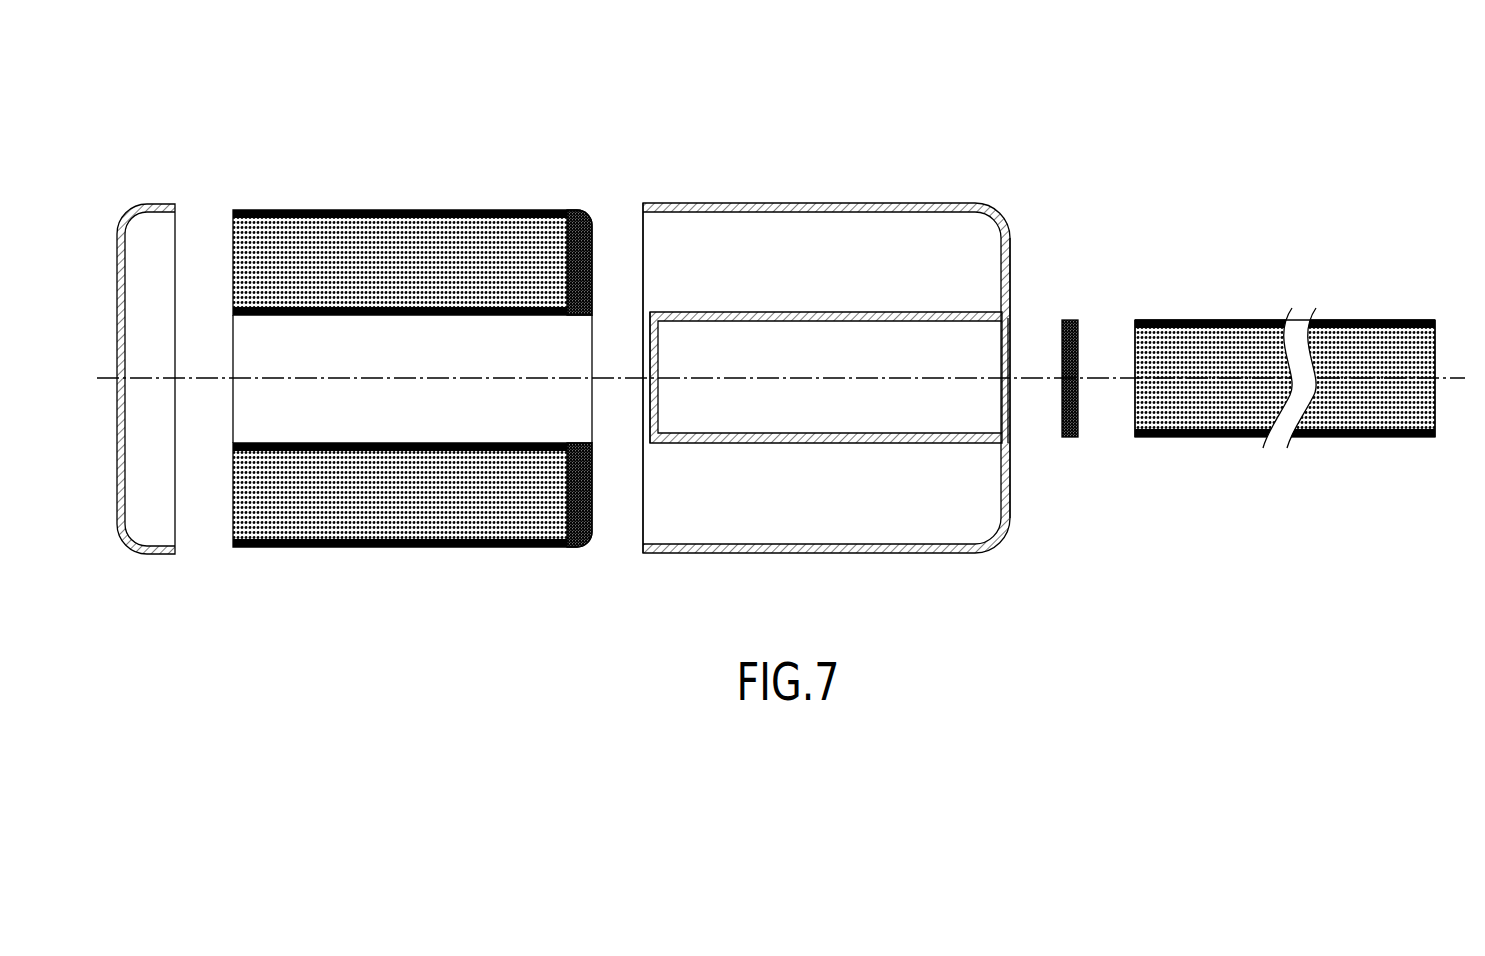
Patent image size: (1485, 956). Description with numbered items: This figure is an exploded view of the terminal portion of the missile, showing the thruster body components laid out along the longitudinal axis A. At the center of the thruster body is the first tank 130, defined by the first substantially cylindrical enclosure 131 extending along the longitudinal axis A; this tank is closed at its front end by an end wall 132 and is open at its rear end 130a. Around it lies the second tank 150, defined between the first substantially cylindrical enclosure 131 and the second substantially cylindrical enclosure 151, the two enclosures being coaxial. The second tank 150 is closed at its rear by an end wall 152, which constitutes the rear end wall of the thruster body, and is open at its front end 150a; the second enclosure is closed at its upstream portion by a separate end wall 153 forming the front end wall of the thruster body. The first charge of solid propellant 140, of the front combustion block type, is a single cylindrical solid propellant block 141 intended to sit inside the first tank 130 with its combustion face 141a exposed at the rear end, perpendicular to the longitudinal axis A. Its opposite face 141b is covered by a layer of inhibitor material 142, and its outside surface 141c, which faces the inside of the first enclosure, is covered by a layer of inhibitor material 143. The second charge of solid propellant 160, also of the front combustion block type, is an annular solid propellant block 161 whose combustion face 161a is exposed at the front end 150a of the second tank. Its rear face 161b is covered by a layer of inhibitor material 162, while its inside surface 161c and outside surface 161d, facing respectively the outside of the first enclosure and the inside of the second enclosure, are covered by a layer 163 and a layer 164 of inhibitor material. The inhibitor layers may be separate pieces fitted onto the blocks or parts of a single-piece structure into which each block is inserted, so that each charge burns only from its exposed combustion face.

The first tank 130 is at (827, 355).
The rear end 130a is at (1012, 320).
The first substantially cylindrical enclosure 131 is at (920, 312).
The end wall 132 is at (650, 398).
The first charge of solid propellant 140 is at (1248, 375).
The solid propellant block 141 is at (1285, 373).
The combustion face 141a is at (1436, 350).
The face 141b is at (1134, 415).
The outside surface 141c is at (1365, 330).
The layer of inhibitor material 142 is at (1068, 437).
The layer of inhibitor material 143 is at (1212, 322).
The second tank 150 is at (577, 301).
The front end 150a is at (619, 350).
The second substantially cylindrical enclosure 151 is at (807, 203).
The end wall 152 is at (1012, 250).
The end wall 153 is at (163, 207).
The second charge of solid propellant 160 is at (428, 363).
The solid propellant block 161 is at (412, 262).
The combustion face 161a is at (232, 516).
The face 161b is at (592, 268).
The inside surface 161c is at (402, 315).
The outside surface 161d is at (426, 548).
The layer of inhibitor material 162 is at (588, 228).
The layer of inhibitor material 163 is at (302, 315).
The layer of inhibitor material 164 is at (412, 516).
The longitudinal axis A is at (1452, 380).